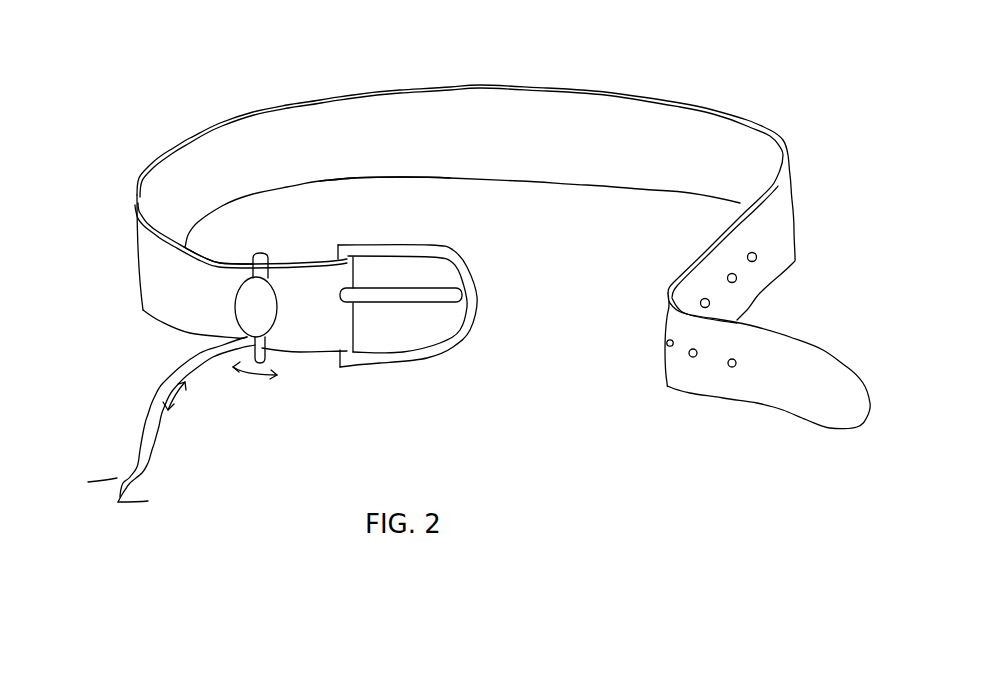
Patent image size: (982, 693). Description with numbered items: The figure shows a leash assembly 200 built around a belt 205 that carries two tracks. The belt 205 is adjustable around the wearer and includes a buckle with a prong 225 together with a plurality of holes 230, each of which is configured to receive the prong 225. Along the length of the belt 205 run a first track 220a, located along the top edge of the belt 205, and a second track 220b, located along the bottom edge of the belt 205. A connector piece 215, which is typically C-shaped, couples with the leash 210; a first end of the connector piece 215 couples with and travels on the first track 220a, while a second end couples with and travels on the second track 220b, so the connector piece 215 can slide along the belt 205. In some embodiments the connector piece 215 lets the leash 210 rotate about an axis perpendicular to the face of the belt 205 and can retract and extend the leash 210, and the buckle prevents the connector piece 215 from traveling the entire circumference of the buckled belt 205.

The leash assembly 200 is at (155, 80).
The belt 205 is at (188, 318).
The leash 210 is at (137, 449).
The connector piece 215 is at (268, 320).
The first track 220a is at (217, 258).
The second track 220b is at (362, 177).
The prong 225 is at (393, 302).
The holes 230 is at (665, 343).